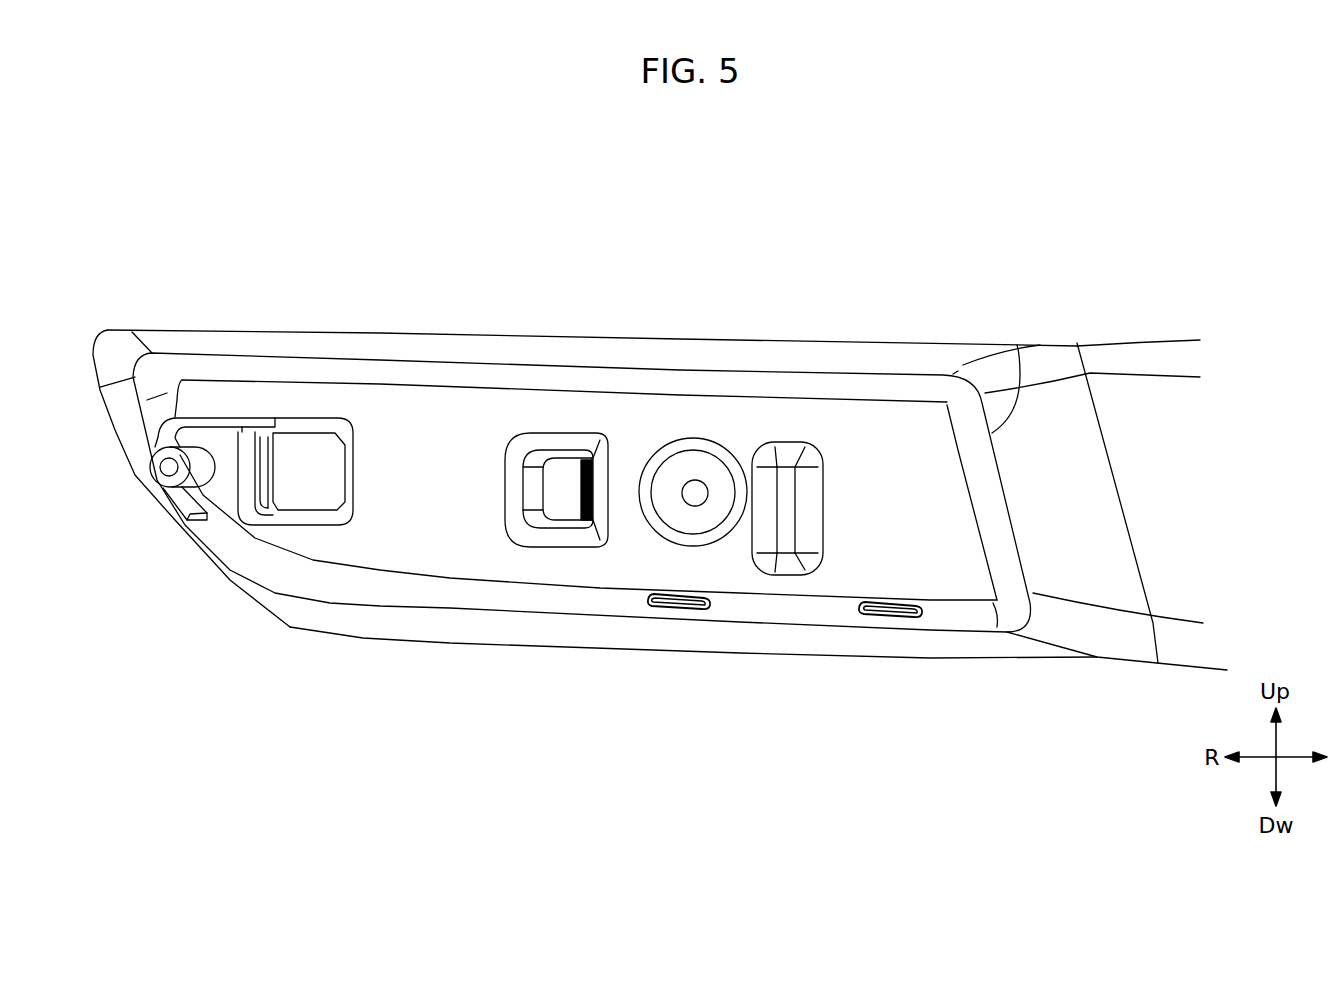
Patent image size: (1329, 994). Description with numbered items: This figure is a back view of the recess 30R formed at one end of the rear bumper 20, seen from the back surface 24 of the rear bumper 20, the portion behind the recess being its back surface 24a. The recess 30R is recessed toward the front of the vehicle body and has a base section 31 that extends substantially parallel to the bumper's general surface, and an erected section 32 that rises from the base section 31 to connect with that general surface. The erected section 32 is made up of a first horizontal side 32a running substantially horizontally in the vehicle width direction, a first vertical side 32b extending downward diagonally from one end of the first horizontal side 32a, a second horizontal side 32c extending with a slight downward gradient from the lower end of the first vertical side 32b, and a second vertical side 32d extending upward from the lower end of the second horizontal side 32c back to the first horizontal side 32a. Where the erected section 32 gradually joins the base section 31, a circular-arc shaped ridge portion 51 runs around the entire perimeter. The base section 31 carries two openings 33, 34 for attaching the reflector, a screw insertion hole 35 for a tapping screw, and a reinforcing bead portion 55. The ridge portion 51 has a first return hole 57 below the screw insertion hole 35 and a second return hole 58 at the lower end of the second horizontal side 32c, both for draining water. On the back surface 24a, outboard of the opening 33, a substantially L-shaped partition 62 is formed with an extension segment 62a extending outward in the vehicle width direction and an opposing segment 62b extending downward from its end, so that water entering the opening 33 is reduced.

The rear bumper 20 is at (818, 215).
The recess 30R is at (788, 342).
The back surface of the rear bumper 24 is at (852, 275).
The back surface of the recess 24a is at (887, 432).
The base section 31 is at (370, 410).
The erected section 32 is at (483, 347).
The first horizontal side 32a is at (585, 350).
The first vertical side 32b is at (123, 435).
The second horizontal side 32c is at (628, 632).
The second vertical side 32d is at (1018, 345).
The opening 33 is at (262, 466).
The opening 34 is at (580, 490).
The screw insertion hole 35 is at (690, 490).
The ridge portion 51 is at (433, 597).
The bead portion 55 is at (785, 527).
The first return hole 57 is at (686, 597).
The second return hole 58 is at (893, 602).
The partition 62 is at (200, 413).
The extension segment 62a is at (230, 416).
The opposing segment 62b is at (175, 505).